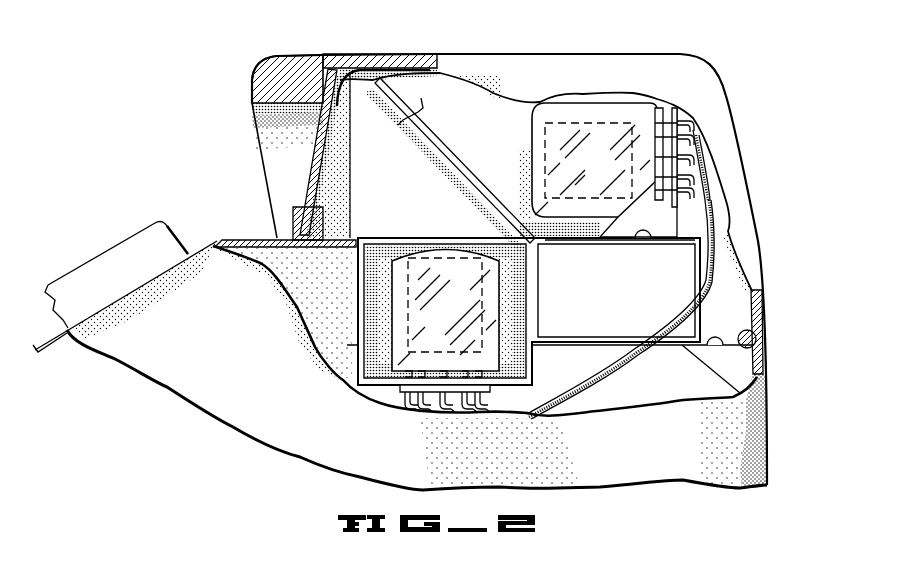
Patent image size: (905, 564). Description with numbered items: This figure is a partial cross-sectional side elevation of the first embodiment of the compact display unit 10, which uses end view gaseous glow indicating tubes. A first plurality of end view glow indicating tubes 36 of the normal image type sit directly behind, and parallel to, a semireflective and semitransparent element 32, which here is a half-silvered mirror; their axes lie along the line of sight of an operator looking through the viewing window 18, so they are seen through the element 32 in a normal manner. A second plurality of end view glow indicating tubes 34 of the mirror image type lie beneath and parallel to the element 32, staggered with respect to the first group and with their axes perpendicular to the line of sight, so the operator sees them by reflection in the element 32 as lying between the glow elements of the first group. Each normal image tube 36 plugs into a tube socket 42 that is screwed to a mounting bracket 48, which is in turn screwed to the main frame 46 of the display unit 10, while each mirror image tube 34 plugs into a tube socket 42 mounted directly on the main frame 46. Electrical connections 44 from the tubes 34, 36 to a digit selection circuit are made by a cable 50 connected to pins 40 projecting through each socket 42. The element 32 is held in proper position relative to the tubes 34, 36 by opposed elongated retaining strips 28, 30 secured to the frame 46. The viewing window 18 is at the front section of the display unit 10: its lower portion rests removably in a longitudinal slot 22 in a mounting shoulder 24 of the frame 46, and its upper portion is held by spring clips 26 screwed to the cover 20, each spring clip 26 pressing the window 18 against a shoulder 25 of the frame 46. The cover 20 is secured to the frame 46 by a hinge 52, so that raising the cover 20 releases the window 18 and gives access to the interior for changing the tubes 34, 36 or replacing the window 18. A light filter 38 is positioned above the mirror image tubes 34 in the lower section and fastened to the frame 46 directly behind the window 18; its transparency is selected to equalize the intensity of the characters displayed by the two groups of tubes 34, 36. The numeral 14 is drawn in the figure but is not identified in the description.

The display unit 10 is at (240, 80).
The panel 14 is at (135, 250).
The viewing window 18 is at (313, 180).
The cover 20 is at (598, 52).
The longitudinal slot 22 is at (293, 212).
The mounting shoulder 24 is at (318, 247).
The shoulder 25 is at (262, 57).
The spring clip 26 is at (357, 54).
The retaining strip 28 is at (446, 153).
The retaining strip 30 is at (427, 143).
The semireflective and semitransparent element 32 is at (387, 102).
The mirror image end view glow indicating tubes 34 is at (450, 247).
The normal image end view glow indicating tubes 36 is at (533, 158).
The light filter 38 is at (380, 243).
The pins 40 is at (378, 390).
The tube socket 42 is at (405, 398).
The electrical connections 44 is at (437, 414).
The main frame 46 is at (534, 305).
The mounting bracket 48 is at (620, 224).
The cable 50 is at (618, 378).
The hinge 52 is at (758, 336).